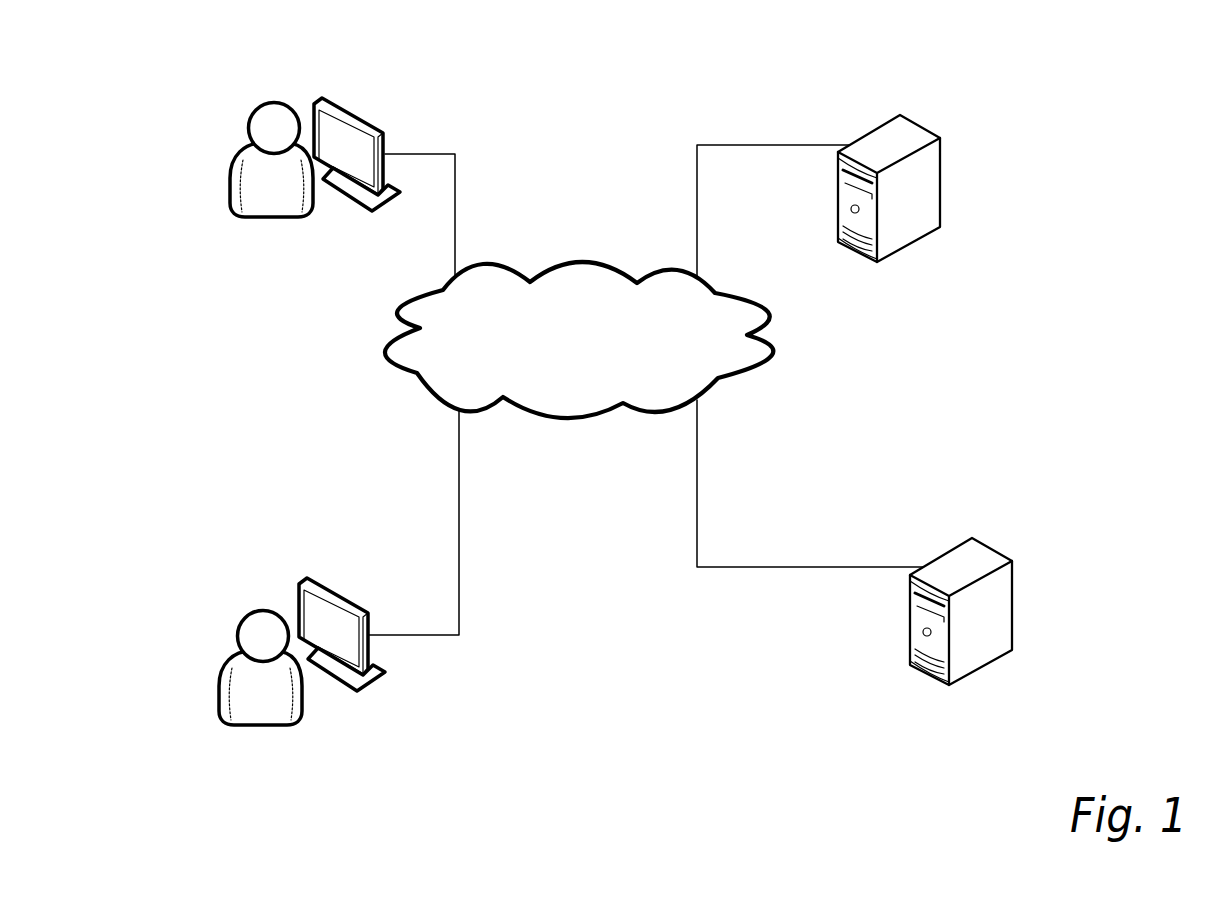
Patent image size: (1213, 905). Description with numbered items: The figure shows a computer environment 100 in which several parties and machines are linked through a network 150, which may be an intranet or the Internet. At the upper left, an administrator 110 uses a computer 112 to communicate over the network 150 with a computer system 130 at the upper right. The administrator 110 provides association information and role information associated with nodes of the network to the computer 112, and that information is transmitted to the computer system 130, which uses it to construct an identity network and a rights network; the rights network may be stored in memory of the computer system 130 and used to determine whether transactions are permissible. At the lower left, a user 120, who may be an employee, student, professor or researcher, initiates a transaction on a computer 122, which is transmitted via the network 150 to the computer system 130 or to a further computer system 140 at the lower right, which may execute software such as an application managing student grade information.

The computer environment 100 is at (552, 714).
The administrator 110 is at (270, 100).
The computer 112 is at (360, 112).
The user 120 is at (253, 612).
The computer 122 is at (343, 592).
The computer system 130 is at (918, 120).
The computer system 140 is at (962, 543).
The network 150 is at (605, 355).